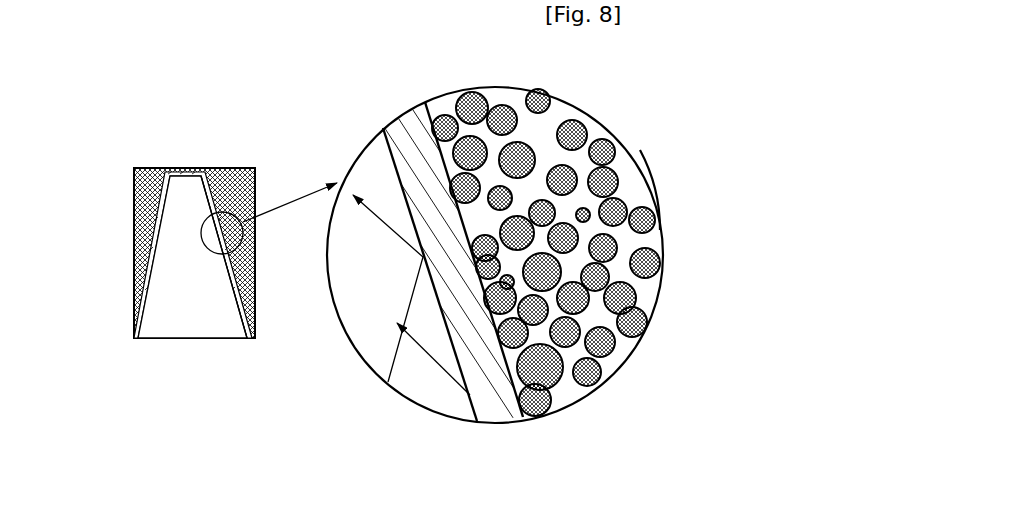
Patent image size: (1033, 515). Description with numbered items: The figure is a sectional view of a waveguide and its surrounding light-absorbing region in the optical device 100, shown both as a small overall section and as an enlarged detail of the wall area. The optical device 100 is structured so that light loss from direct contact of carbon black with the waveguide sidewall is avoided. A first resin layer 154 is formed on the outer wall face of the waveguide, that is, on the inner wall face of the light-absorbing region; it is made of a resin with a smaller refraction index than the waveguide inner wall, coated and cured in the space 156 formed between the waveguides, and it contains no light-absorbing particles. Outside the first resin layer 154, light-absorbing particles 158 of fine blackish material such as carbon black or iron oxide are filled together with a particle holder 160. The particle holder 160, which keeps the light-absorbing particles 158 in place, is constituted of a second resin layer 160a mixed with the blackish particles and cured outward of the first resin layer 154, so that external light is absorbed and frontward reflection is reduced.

The optical device 100 is at (197, 241).
The first resin layer 154 is at (403, 150).
The space 156 is at (662, 290).
The light-absorbing particles 158 is at (655, 205).
The particle holder 160 is at (573, 393).
The second resin layer 160a is at (620, 350).